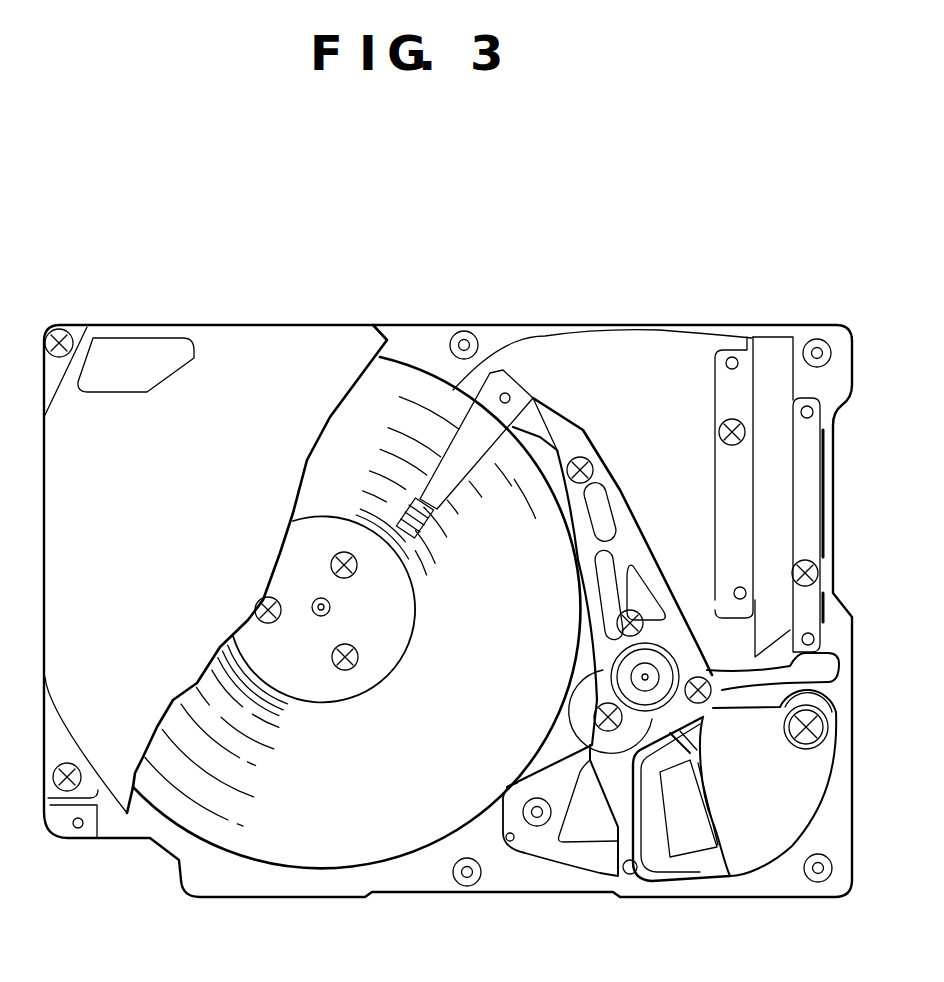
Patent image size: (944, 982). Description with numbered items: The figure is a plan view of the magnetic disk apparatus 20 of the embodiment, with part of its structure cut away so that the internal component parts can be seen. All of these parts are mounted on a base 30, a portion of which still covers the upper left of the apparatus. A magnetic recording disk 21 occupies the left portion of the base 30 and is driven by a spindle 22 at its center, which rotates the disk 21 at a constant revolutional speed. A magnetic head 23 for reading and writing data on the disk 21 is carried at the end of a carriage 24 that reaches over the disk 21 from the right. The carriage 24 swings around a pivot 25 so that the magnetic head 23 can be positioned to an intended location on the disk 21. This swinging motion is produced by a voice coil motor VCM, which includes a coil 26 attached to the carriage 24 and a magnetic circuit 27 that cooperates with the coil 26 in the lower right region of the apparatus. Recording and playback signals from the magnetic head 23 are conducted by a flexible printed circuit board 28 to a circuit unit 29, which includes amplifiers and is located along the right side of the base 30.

The magnetic disk apparatus 20 is at (816, 227).
The magnetic recording disk 21 is at (280, 862).
The spindle 22 is at (313, 590).
The magnetic head 23 is at (340, 470).
The carriage 24 is at (539, 400).
The pivot 25 is at (640, 678).
The coil 26 is at (683, 874).
The magnetic circuit 27 is at (594, 840).
The flexible printed circuit board 28 is at (838, 673).
The circuit unit 29 is at (780, 498).
The base 30 is at (660, 325).
The voice coil motor VCM is at (733, 872).